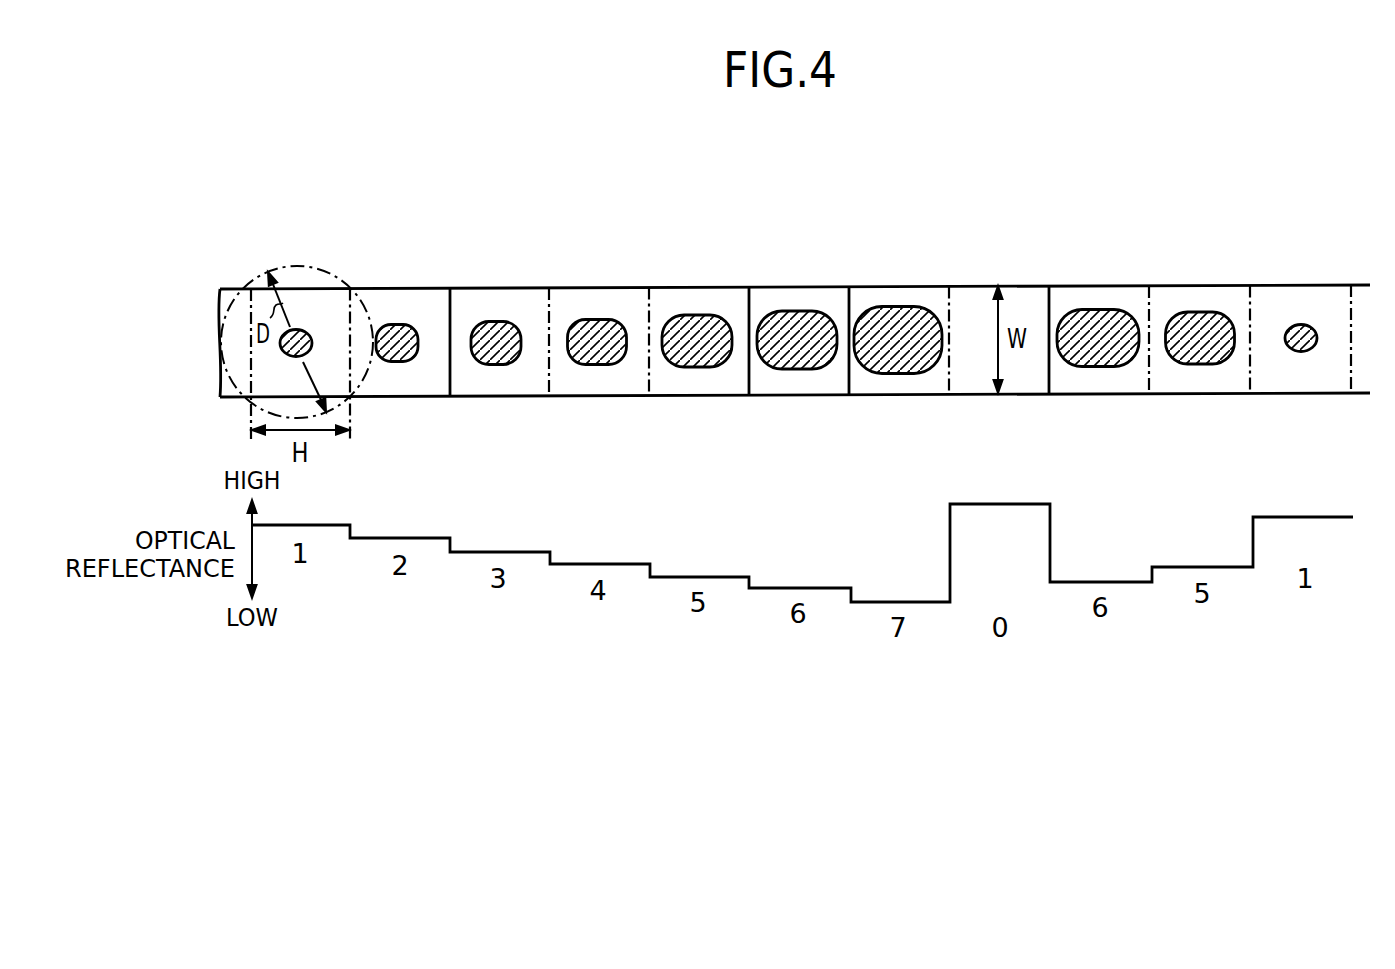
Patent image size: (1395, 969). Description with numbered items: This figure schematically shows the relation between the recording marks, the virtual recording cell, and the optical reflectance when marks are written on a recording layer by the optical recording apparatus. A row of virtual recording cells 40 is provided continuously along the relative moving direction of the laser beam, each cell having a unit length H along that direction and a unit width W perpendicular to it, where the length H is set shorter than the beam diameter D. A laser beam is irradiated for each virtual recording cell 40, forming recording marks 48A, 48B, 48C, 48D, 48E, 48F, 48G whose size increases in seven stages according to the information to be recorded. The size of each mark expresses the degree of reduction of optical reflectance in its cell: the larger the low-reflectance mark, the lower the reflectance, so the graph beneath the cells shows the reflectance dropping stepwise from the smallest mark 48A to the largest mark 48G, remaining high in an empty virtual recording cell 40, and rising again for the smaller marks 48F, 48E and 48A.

The virtual recording cell 40 is at (1048, 277).
The recording mark 48A is at (291, 330).
The recording mark 48B is at (394, 325).
The recording mark 48C is at (493, 322).
The recording mark 48D is at (596, 320).
The recording mark 48E is at (697, 316).
The recording mark 48F is at (797, 312).
The recording mark 48G is at (898, 307).